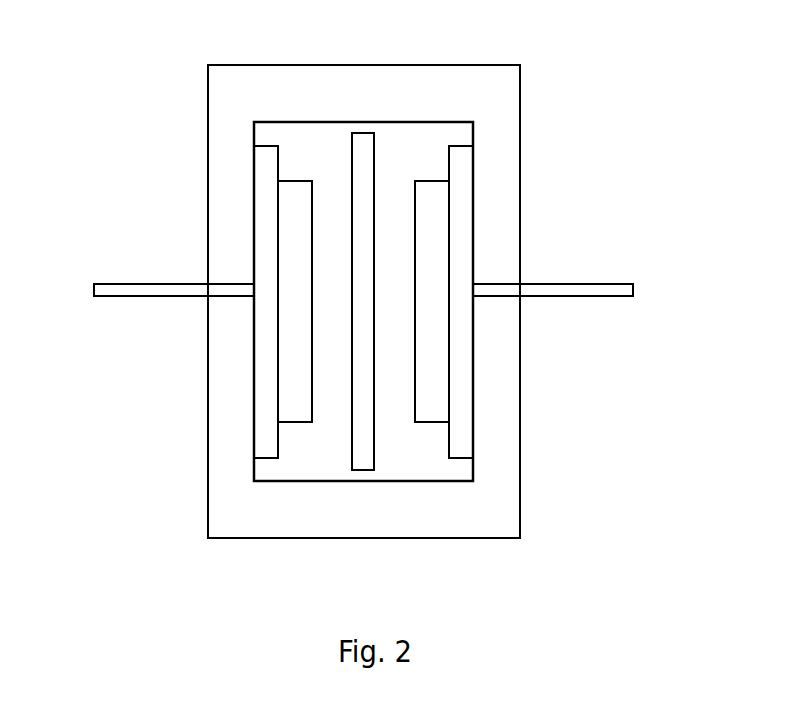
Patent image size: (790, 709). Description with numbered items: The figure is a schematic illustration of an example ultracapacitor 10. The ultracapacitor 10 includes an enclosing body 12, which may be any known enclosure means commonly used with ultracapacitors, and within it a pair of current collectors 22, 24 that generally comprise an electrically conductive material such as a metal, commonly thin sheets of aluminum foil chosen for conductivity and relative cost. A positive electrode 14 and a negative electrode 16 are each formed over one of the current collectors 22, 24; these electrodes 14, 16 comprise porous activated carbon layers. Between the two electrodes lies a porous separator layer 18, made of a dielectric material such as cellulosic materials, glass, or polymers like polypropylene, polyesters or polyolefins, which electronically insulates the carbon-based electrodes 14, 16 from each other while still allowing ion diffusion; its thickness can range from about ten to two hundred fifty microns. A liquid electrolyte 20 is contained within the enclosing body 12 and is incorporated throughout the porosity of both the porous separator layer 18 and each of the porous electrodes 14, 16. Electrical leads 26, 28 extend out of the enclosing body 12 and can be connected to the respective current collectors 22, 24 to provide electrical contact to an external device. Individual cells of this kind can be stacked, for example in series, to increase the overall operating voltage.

The ultracapacitor 10 is at (130, 74).
The enclosing body 12 is at (484, 515).
The positive electrode 14 is at (302, 412).
The negative electrode 16 is at (434, 412).
The porous separator layer 18 is at (362, 145).
The liquid electrolyte 20 is at (435, 170).
The current collector 22 is at (267, 203).
The current collector 24 is at (458, 208).
The electrical lead 26 is at (127, 289).
The electrical lead 28 is at (607, 293).